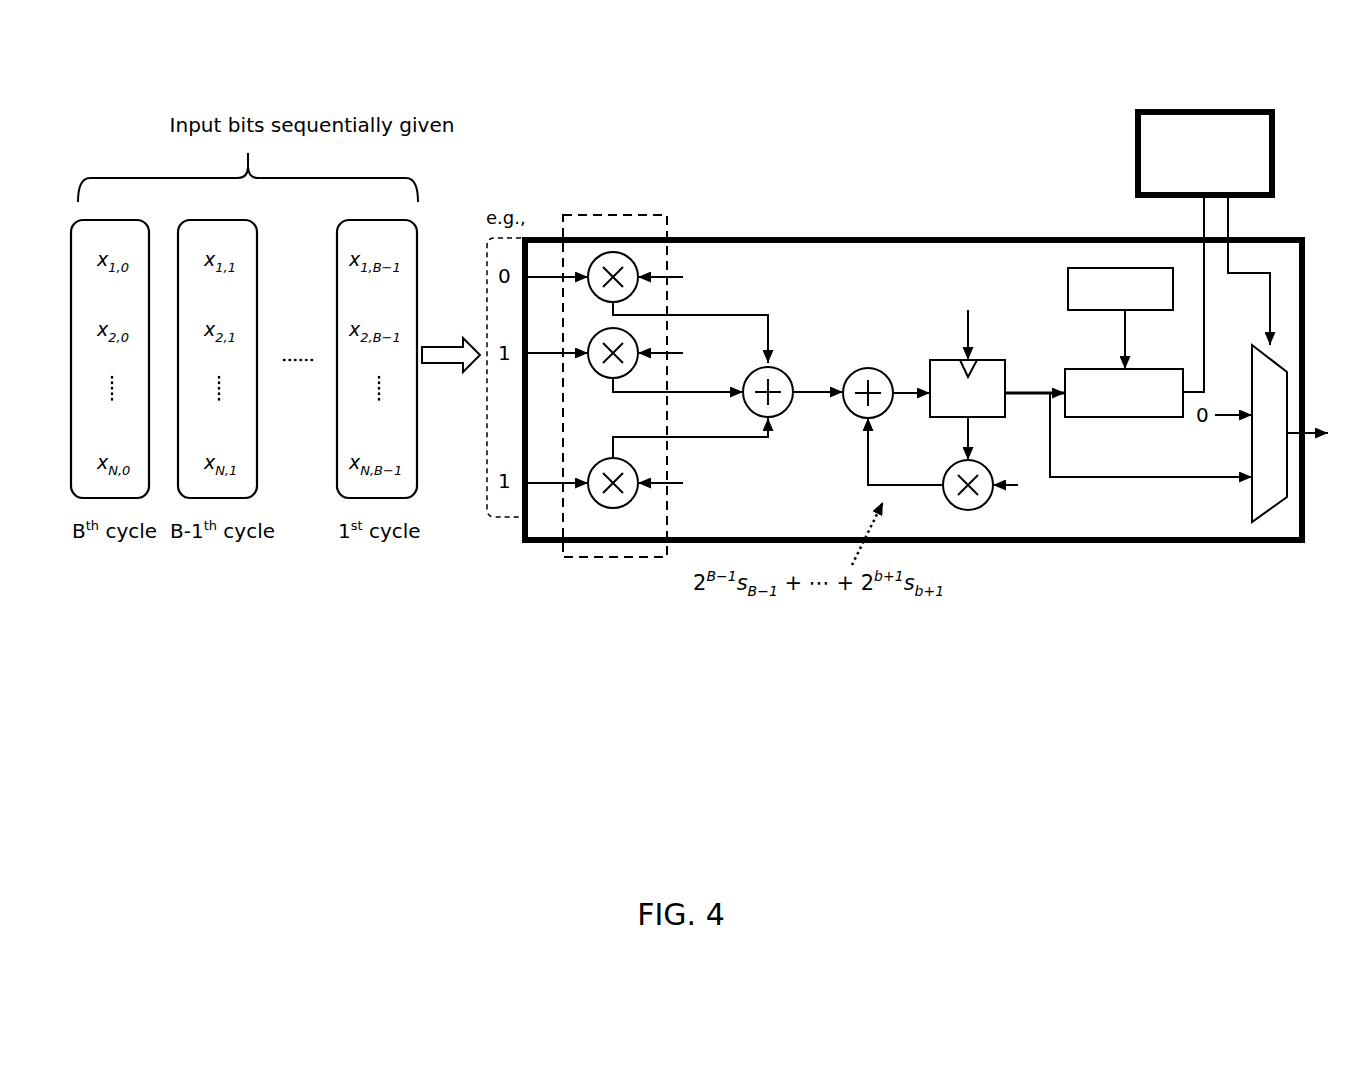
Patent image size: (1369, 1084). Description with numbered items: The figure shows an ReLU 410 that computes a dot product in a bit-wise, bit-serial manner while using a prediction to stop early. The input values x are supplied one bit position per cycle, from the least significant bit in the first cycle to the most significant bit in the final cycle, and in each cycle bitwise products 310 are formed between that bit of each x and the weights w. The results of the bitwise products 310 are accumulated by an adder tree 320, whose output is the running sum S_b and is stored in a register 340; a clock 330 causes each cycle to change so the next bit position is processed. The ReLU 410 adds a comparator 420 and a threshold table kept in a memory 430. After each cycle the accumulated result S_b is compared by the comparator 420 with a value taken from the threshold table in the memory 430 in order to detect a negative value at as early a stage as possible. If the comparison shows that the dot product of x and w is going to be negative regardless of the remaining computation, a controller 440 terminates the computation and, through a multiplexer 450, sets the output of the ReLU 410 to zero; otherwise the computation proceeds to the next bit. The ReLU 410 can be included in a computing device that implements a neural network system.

The bitwise products 310 is at (627, 213).
The adder tree 320 is at (792, 363).
The clock 330 is at (980, 322).
The register 340 is at (997, 434).
The ReLU 410 is at (1143, 545).
The comparator 420 is at (1083, 366).
The memory 430 is at (1080, 267).
The controller 440 is at (1202, 110).
The multiplexer 450 is at (1250, 507).